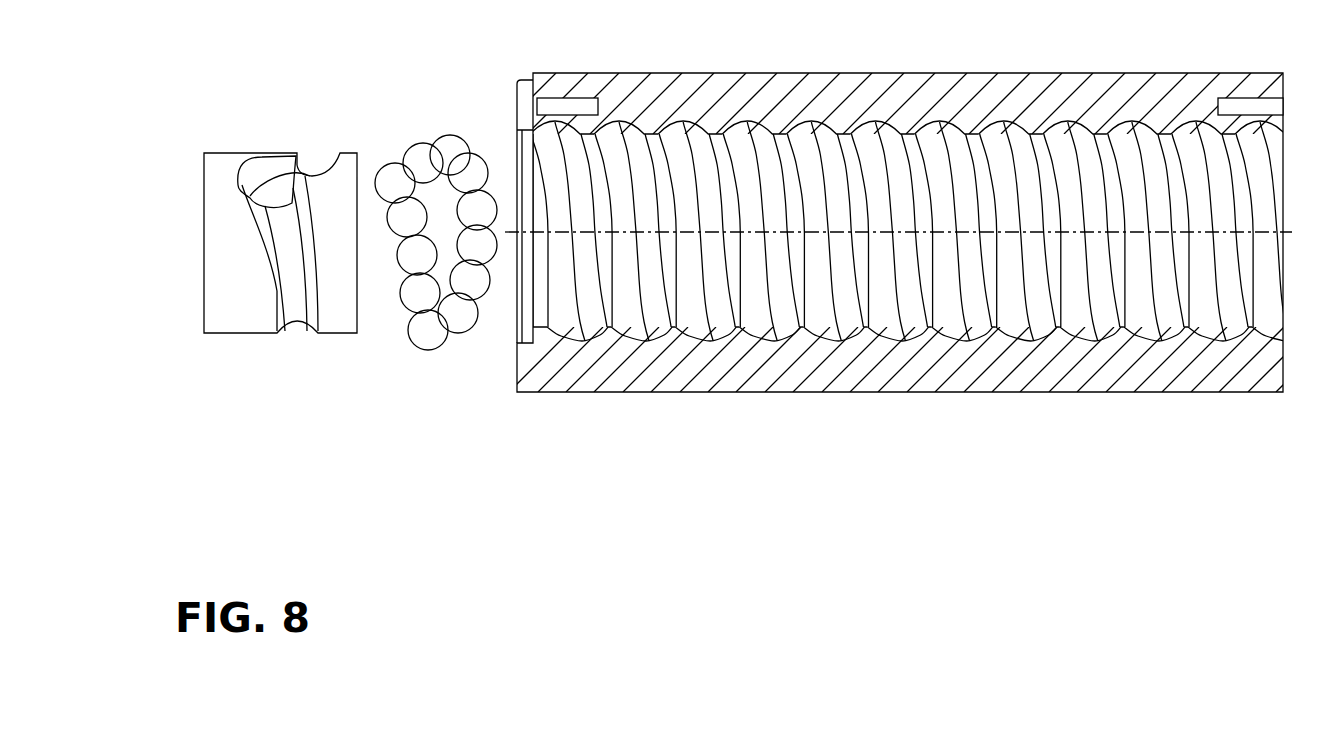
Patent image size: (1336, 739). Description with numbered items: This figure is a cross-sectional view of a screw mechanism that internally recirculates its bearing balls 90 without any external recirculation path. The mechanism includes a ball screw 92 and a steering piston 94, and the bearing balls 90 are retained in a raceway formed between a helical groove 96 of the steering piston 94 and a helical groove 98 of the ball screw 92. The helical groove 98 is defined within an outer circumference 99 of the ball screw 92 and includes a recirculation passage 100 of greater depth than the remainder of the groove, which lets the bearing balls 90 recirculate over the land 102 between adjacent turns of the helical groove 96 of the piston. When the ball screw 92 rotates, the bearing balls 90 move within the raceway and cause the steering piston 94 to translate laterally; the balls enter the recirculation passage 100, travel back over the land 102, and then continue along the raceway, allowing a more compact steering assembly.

The bearing balls 90 is at (428, 332).
The ball screw 92 is at (237, 237).
The steering piston 94 is at (947, 363).
The helical groove 96 is at (917, 322).
The helical groove 98 is at (312, 175).
The outer circumference 99 is at (237, 325).
The recirculation passage 100 is at (268, 201).
The land 102 is at (806, 140).